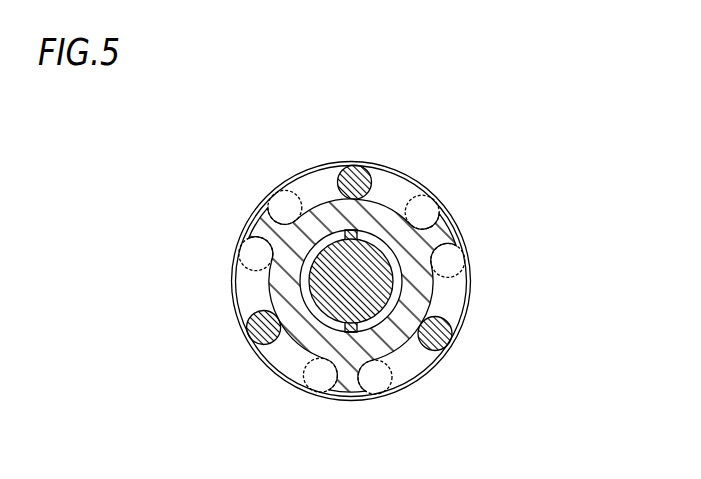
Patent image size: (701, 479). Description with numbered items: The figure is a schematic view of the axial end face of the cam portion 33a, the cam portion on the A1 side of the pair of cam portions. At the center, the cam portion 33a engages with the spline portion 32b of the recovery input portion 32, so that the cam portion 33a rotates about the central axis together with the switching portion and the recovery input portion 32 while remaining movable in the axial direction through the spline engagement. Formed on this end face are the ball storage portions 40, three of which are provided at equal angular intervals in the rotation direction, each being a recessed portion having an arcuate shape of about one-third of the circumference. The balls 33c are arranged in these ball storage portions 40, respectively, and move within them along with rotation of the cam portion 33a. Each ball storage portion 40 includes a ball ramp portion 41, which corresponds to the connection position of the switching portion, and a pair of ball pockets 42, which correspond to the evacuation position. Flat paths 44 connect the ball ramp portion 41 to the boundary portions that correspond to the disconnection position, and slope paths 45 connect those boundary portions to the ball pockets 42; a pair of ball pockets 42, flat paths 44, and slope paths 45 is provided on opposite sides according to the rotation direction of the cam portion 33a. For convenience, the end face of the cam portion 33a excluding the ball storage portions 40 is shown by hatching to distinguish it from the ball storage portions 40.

The recovery input portion 32 is at (311, 292).
The spline portion 32b is at (360, 239).
The cam portion 33a is at (252, 224).
The balls 33c is at (354, 165).
The ball storage portions 40 is at (402, 180).
The ball ramp portion 41 is at (375, 167).
The ball pockets 42 is at (279, 204).
The flat paths 44 is at (322, 186).
The slope paths 45 is at (302, 200).